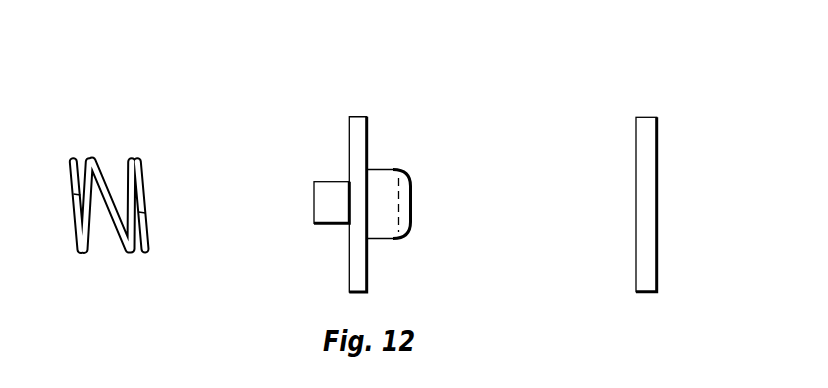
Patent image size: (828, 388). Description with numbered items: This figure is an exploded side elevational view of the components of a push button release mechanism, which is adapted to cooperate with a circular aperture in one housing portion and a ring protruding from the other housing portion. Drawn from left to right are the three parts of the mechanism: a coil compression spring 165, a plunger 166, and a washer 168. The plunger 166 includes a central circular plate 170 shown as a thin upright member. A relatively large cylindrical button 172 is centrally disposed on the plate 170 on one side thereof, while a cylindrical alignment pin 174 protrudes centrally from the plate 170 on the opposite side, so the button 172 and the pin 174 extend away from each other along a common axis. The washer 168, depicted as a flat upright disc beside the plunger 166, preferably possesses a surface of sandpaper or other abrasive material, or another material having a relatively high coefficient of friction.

The coil compression spring 165 is at (120, 153).
The plunger 166 is at (393, 123).
The washer 168 is at (657, 135).
The central circular plate 170 is at (348, 163).
The cylindrical button 172 is at (413, 182).
The cylindrical alignment pin 174 is at (313, 212).